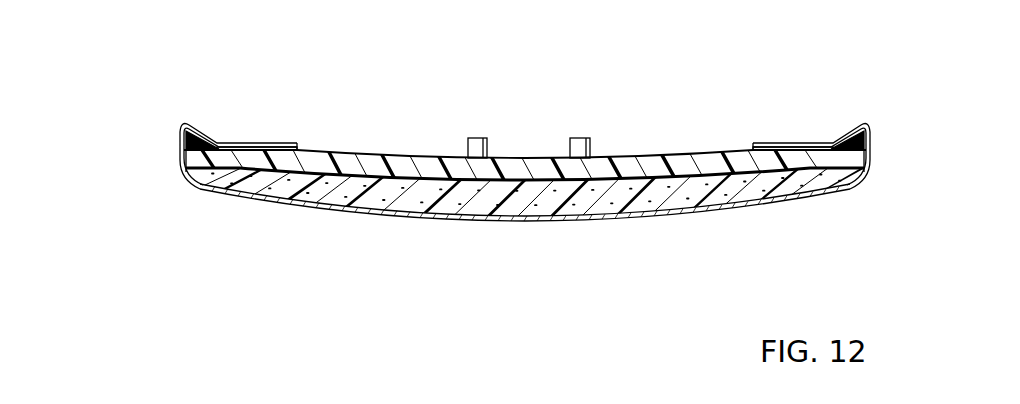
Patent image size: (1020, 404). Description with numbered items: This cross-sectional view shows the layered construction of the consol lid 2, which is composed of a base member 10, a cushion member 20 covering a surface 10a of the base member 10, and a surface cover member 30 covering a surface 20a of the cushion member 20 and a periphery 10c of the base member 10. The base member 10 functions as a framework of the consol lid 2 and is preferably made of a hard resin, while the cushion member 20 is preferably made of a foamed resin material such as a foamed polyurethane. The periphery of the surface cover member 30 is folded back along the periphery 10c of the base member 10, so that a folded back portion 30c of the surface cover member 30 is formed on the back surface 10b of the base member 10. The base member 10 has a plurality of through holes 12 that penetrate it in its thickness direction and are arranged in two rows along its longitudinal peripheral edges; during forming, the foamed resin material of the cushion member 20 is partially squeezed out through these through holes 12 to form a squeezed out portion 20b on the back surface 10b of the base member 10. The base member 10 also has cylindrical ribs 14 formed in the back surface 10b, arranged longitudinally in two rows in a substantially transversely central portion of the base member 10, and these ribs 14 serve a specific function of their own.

The consol lid 2 is at (750, 70).
The base member 10 is at (680, 160).
The surface 10a is at (420, 176).
The back surface 10b is at (618, 158).
The periphery 10c is at (184, 148).
The through holes 12 is at (244, 148).
The cylindrical ribs 14 is at (580, 136).
The cushion member 20 is at (528, 198).
The surface 20a is at (357, 196).
The squeezed out portion 20b is at (199, 127).
The surface cover member 30 is at (583, 222).
The folded back portion 30c is at (228, 143).